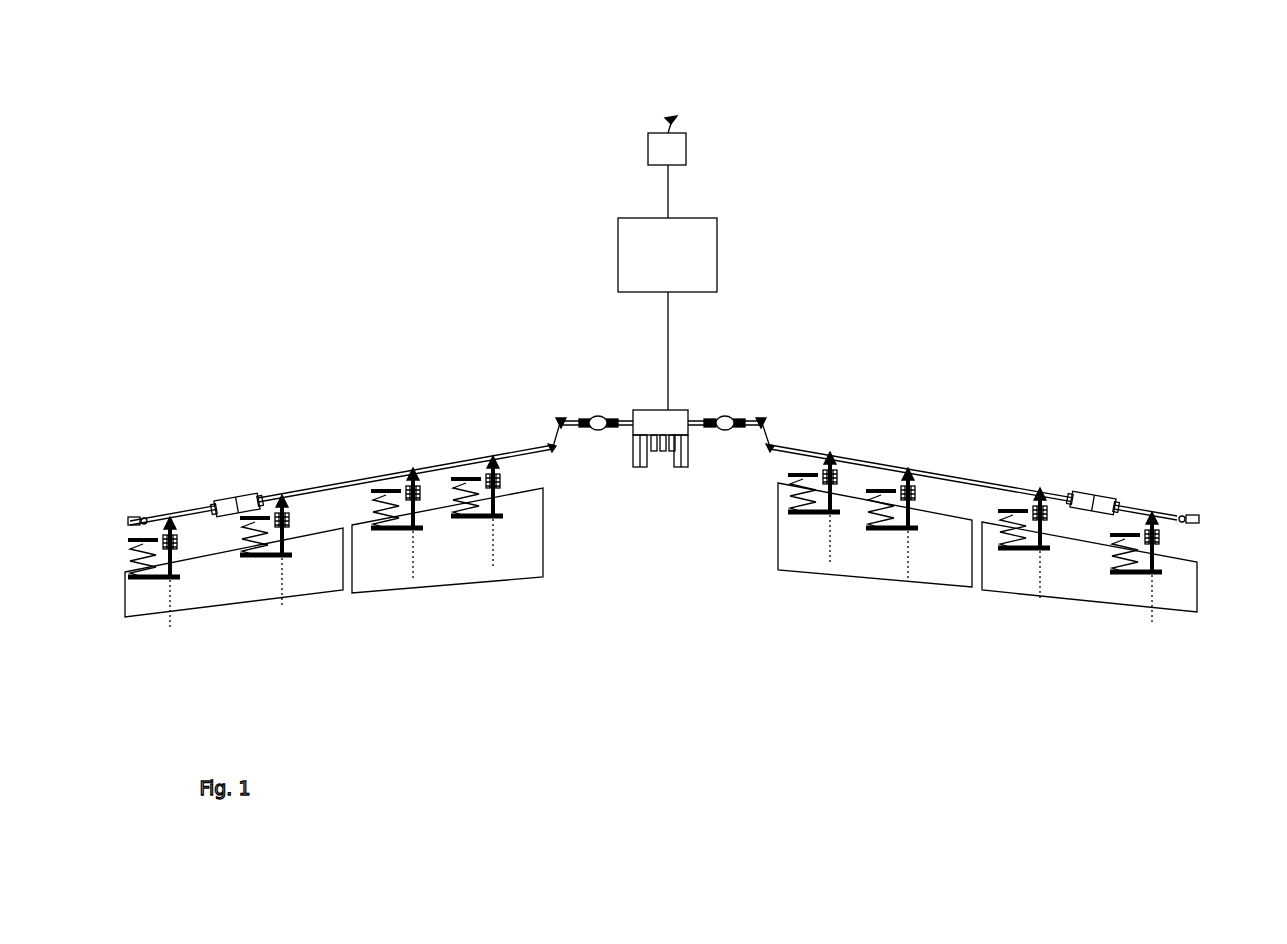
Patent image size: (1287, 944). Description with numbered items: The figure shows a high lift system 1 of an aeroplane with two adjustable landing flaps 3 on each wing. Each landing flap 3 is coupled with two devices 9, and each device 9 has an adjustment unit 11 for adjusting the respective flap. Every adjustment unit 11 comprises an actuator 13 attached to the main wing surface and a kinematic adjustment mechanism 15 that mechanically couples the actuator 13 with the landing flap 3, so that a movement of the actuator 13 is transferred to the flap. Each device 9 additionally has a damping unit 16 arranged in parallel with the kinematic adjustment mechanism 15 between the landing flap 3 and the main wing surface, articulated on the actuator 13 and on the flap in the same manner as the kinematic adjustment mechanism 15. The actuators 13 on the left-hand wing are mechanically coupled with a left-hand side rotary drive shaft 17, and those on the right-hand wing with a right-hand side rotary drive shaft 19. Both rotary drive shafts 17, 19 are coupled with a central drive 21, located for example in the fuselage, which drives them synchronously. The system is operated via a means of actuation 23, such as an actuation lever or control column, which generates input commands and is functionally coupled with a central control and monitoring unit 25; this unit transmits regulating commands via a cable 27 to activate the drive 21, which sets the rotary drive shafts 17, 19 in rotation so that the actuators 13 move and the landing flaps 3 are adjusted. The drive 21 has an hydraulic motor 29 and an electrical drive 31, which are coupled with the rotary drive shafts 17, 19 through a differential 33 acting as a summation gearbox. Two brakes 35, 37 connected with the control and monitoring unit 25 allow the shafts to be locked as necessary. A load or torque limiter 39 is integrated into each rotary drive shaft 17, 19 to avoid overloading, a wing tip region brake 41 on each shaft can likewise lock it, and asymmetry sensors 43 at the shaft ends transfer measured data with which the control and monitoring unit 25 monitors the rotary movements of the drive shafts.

The high lift system 1 is at (990, 157).
The landing flap 3 is at (148, 617).
The device 9 is at (153, 430).
The adjustment unit 11 is at (178, 552).
The actuator 13 is at (180, 540).
The kinematic adjustment mechanism 15 is at (148, 579).
The damping unit 16 is at (128, 556).
The left-hand side rotary drive shaft 17 is at (318, 485).
The right-hand side rotary drive shaft 19 is at (1000, 482).
The central drive 21 is at (678, 412).
The means of actuation 23 is at (648, 141).
The control and monitoring unit 25 is at (710, 229).
The cable 27 is at (668, 330).
The hydraulic motor 29 is at (639, 455).
The electrical drive 31 is at (688, 462).
The differential 33 is at (654, 463).
The brake 35 is at (633, 437).
The brake 37 is at (678, 440).
The load or torque limiter 39 is at (600, 416).
The wing tip region brake 41 is at (237, 497).
The asymmetry sensor 43 is at (134, 516).